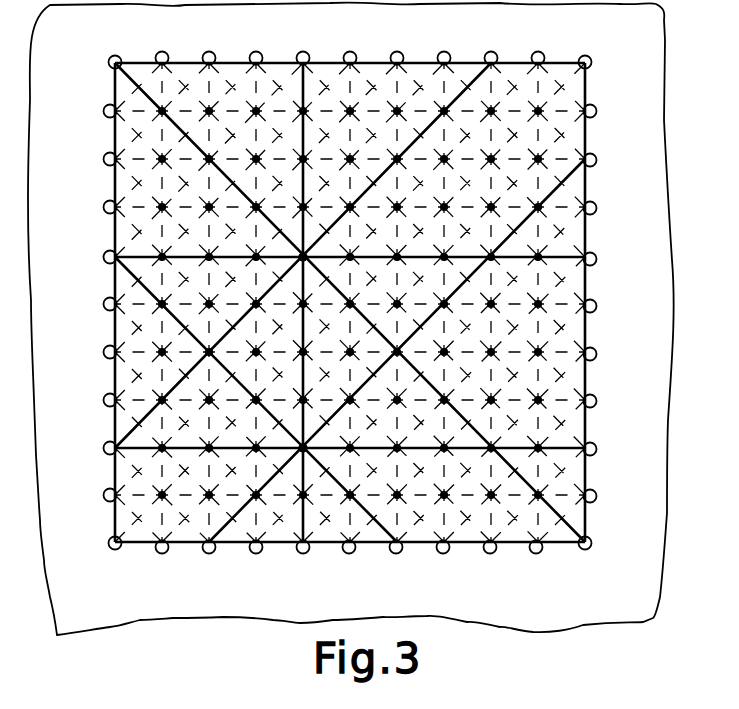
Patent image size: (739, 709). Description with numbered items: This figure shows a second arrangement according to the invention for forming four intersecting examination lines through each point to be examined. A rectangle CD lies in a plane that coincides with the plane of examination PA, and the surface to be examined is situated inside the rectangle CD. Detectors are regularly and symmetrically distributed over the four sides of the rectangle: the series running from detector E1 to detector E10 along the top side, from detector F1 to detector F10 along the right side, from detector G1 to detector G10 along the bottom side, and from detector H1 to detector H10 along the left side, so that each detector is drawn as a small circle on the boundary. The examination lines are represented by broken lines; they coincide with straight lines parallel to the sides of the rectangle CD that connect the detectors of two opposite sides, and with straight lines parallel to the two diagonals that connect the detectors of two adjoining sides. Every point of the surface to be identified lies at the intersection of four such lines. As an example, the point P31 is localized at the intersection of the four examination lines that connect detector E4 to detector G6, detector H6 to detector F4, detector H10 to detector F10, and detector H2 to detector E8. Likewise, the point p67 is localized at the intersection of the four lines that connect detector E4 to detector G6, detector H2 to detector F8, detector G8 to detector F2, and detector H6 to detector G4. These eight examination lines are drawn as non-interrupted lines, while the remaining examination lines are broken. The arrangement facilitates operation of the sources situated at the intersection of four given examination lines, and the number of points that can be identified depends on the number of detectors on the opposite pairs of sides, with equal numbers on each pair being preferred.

The detector E1 is at (163, 52).
The detector E4 is at (303, 52).
The detector E8 is at (489, 53).
The detector E10 is at (582, 56).
The detector H10 is at (110, 67).
The detector H6 is at (104, 258).
The detector H2 is at (104, 449).
The detector H1 is at (104, 495).
The detector G10 is at (111, 551).
The detector G8 is at (207, 553).
The detector G6 is at (303, 553).
The detector G4 is at (396, 553).
The detector G1 is at (536, 553).
The detector F1 is at (596, 111).
The detector F2 is at (596, 160).
The detector F4 is at (594, 256).
The detector F8 is at (596, 448).
The detector F10 is at (594, 541).
The point P31 is at (304, 253).
The point p67 is at (303, 450).
The rectangle CD is at (602, 382).
The plane of examination PA is at (138, 616).